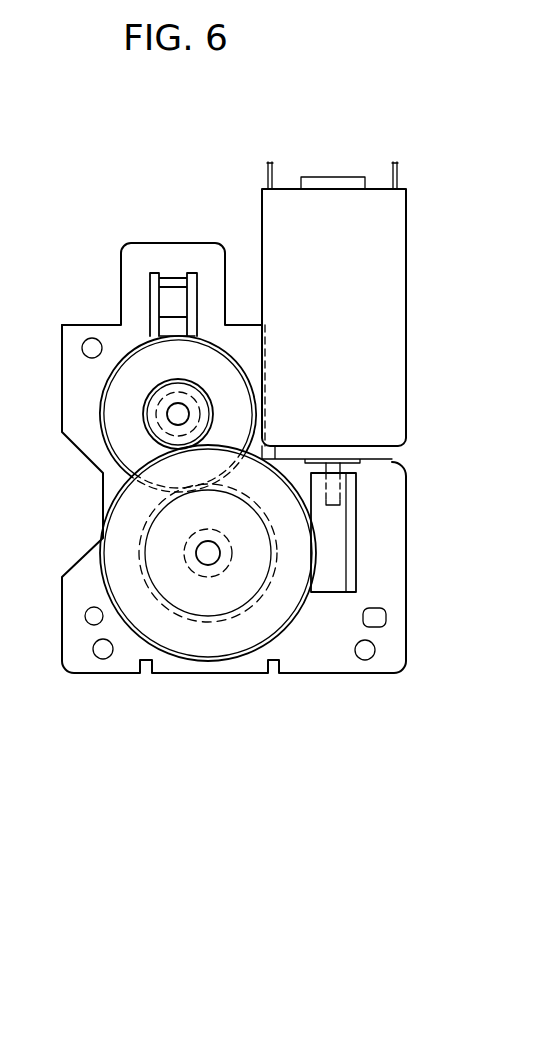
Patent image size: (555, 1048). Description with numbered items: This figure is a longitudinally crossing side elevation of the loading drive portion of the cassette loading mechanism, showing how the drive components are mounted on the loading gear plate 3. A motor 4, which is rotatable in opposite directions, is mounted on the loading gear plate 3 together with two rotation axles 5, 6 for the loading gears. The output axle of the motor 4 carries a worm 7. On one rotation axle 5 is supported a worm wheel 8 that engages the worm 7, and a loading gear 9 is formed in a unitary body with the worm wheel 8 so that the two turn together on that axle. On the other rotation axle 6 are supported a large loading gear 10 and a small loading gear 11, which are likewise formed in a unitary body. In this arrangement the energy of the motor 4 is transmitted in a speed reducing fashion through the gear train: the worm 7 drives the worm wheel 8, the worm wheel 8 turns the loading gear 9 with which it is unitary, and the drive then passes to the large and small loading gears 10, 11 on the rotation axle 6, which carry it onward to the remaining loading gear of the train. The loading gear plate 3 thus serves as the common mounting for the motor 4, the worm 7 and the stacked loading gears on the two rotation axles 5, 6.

The loading gear plate 3 is at (406, 636).
The motor 4 is at (370, 200).
The rotation axle 5 is at (211, 553).
The rotation axle 6 is at (176, 415).
The worm 7 is at (356, 545).
The worm wheel 8 is at (191, 653).
The loading gear 9 is at (212, 628).
The large loading gear 10 is at (102, 393).
The small loading gear 11 is at (142, 402).